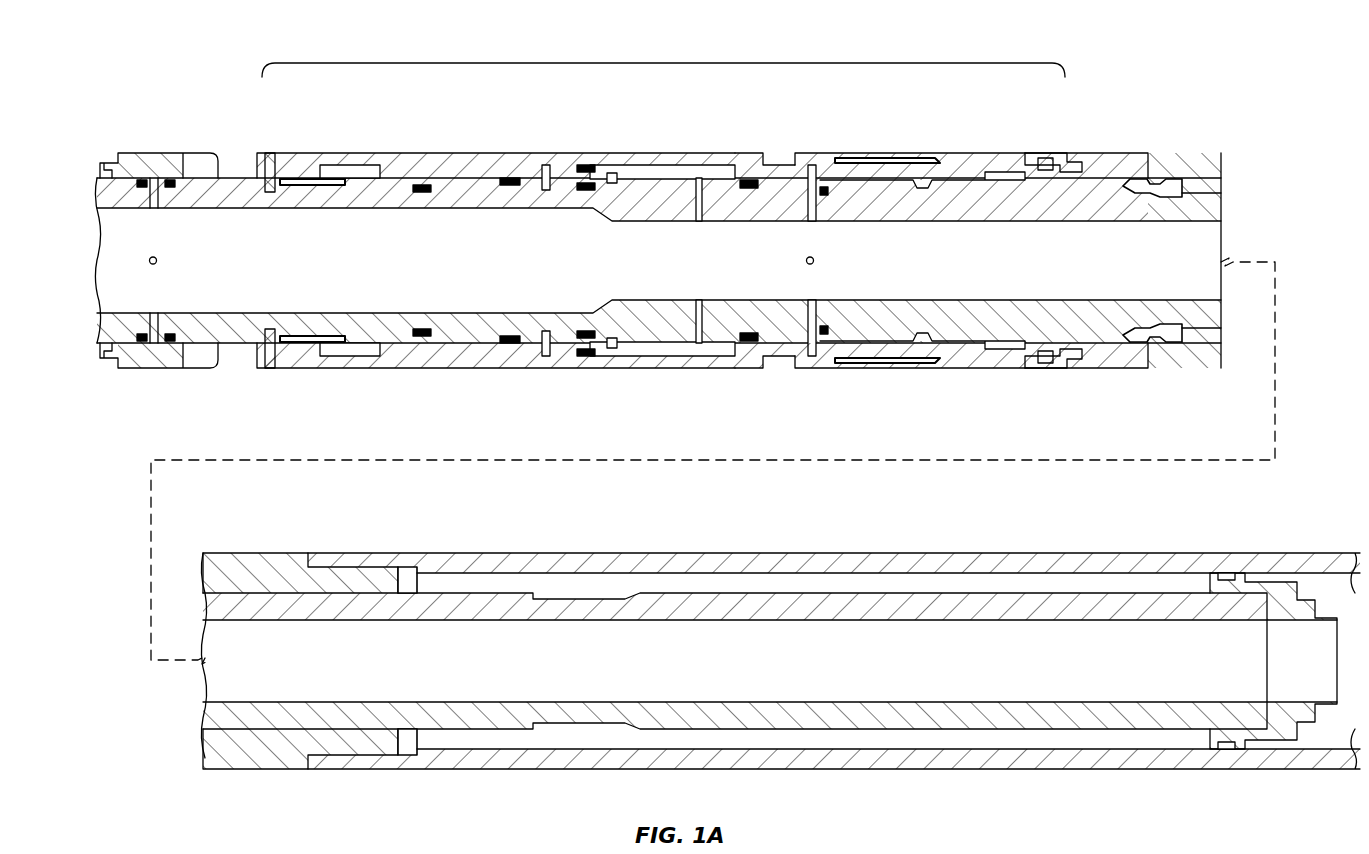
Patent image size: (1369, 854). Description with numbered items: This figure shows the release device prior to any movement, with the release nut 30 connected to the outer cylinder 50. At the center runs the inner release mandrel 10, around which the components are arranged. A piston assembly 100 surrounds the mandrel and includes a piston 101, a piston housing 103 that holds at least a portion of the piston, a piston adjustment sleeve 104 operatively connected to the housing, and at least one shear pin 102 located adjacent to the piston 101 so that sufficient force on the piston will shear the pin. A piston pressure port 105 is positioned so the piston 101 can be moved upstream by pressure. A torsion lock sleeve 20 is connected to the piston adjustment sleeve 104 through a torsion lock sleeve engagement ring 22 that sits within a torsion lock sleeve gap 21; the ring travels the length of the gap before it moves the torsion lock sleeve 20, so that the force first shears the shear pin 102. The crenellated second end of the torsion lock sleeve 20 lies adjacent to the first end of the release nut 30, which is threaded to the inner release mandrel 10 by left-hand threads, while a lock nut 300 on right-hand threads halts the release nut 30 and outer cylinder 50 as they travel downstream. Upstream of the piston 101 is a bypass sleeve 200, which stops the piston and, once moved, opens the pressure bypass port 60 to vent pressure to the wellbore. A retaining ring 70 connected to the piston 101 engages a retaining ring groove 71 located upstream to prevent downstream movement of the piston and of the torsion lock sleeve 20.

The inner release mandrel 10 is at (242, 271).
The torsion lock sleeve 20 is at (1096, 165).
The torsion lock sleeve gap 21 is at (1040, 160).
The torsion lock sleeve engagement ring 22 is at (1060, 160).
The release nut 30 is at (1216, 158).
The outer cylinder 50 is at (816, 552).
The pressure bypass port 60 is at (151, 176).
The retaining ring 70 is at (373, 182).
The retaining ring groove 71 is at (302, 178).
The piston assembly 100 is at (656, 63).
The piston 101 is at (381, 158).
The shear pin 102 is at (271, 158).
The piston housing 103 is at (743, 155).
The piston adjustment sleeve 104 is at (931, 160).
The piston pressure port 105 is at (546, 186).
The bypass sleeve 200 is at (135, 160).
The lock nut 300 is at (1246, 572).